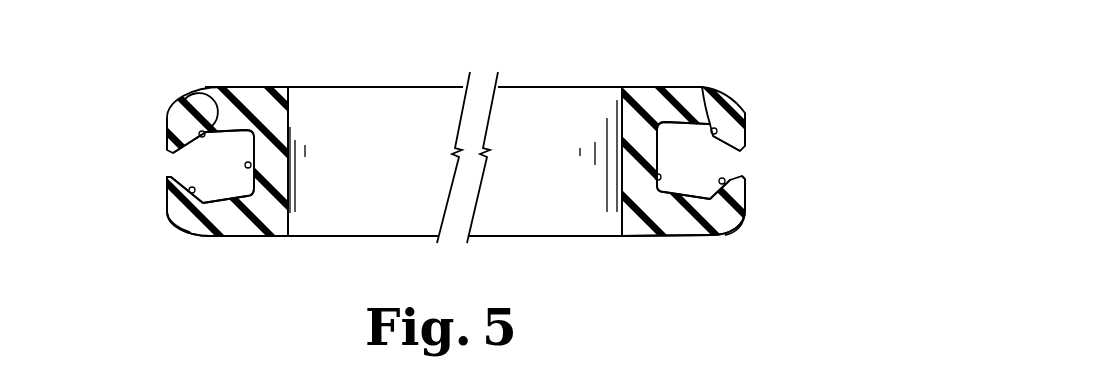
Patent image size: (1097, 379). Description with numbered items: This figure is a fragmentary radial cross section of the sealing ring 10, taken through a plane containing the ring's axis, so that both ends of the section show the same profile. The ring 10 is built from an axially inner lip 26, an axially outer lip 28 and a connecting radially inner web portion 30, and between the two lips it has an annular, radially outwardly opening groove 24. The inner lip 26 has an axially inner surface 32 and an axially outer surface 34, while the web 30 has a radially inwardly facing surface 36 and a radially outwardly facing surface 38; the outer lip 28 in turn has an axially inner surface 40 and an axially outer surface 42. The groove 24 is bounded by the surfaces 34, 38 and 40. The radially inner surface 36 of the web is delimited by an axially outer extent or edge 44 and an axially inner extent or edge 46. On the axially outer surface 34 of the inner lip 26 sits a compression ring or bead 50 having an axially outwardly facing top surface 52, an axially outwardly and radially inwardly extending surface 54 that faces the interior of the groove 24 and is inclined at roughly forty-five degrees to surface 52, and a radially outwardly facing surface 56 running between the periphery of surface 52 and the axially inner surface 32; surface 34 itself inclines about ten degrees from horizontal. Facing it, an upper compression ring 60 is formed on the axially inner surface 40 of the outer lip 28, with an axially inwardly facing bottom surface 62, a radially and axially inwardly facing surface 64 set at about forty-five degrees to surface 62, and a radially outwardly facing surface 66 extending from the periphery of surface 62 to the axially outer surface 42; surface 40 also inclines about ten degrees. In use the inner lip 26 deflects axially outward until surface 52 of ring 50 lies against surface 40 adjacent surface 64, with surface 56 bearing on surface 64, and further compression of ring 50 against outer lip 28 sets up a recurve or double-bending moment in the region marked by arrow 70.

The sealing ring 10 is at (423, 54).
The groove 24 is at (86, 165).
The axially inner lip 26 is at (248, 228).
The axially outer lip 28 is at (248, 97).
The web portion 30 is at (280, 133).
The axially inner surface 32 is at (210, 237).
The axially outer surface 34 is at (226, 203).
The radially inwardly facing surface 36 is at (290, 172).
The radially outwardly facing surface 38 is at (251, 167).
The axially inner surface 40 is at (228, 129).
The axially outer surface 42 is at (217, 88).
The axially outer edge 44 is at (288, 90).
The axially inner edge 46 is at (289, 237).
The compression ring 50 is at (190, 223).
The top surface 52 is at (166, 175).
The inclined surface 54 is at (175, 217).
The radially outwardly facing surface 56 is at (166, 193).
The upper compression ring 60 is at (182, 115).
The bottom surface 62 is at (172, 157).
The radially and axially inwardly facing surface 64 is at (217, 91).
The radially outwardly facing surface 66 is at (166, 127).
The arrow 70 is at (190, 205).